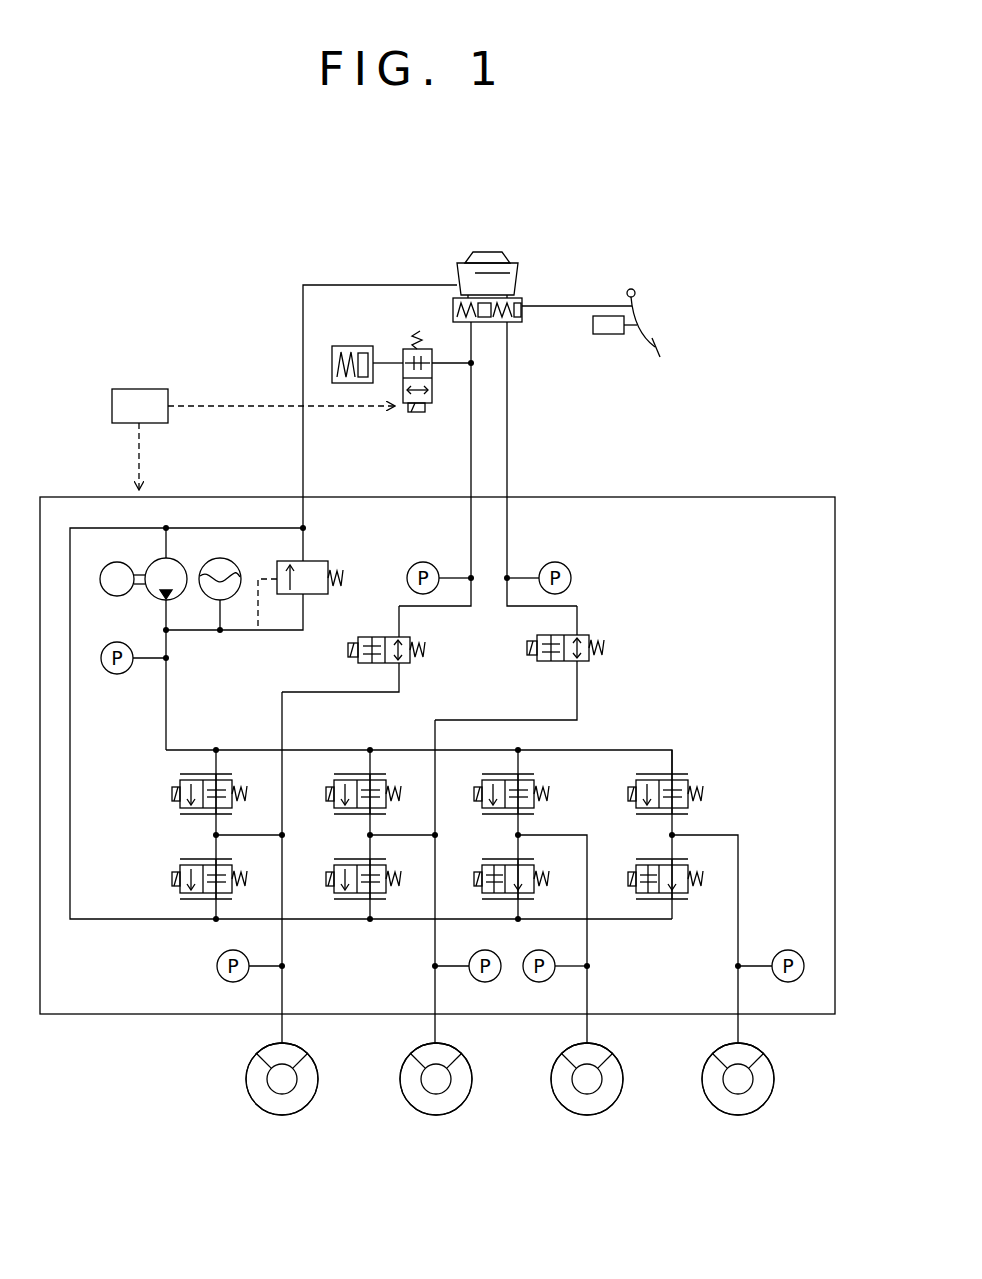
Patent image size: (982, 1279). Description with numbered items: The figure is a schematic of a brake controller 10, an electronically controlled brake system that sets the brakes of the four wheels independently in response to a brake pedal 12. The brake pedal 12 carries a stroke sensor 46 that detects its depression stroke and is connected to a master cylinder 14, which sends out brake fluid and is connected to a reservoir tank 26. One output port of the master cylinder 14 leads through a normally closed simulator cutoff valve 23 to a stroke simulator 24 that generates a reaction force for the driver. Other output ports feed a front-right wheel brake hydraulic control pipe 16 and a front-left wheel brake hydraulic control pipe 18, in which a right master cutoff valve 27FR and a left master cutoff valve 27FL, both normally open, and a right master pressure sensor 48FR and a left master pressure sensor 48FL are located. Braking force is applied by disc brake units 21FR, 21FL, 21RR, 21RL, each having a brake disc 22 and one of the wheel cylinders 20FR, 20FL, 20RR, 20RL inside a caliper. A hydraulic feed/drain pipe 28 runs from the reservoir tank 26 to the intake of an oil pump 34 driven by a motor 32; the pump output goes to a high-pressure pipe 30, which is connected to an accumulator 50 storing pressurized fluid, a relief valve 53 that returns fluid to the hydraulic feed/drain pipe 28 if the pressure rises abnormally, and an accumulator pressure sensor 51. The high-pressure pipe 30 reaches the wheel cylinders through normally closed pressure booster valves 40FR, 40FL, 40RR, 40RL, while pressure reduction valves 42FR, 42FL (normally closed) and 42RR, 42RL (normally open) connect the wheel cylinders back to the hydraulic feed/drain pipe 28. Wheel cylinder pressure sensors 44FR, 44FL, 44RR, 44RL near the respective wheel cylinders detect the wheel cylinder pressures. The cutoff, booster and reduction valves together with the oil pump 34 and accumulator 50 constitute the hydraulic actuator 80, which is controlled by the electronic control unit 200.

The brake controller 10 is at (230, 320).
The brake pedal 12 is at (662, 350).
The master cylinder 14 is at (517, 322).
The front-right wheel brake hydraulic control pipe 16 is at (441, 606).
The front-left wheel brake hydraulic control pipe 18 is at (522, 606).
The front-right wheel cylinder 20FR is at (266, 1060).
The front-left wheel cylinder 20FL is at (420, 1060).
The rear-left wheel cylinder 20RL is at (571, 1060).
The rear-right wheel cylinder 20RR is at (722, 1060).
The disc brake unit 21FR is at (246, 1098).
The disc brake unit 21FL is at (397, 1098).
The disc brake unit 21RL is at (549, 1098).
The disc brake unit 21RR is at (701, 1098).
The brake disc 22 is at (283, 1103).
The simulator cutoff valve 23 is at (428, 410).
The stroke simulator 24 is at (352, 346).
The reservoir tank 26 is at (488, 252).
The right master cutoff valve 27FR is at (348, 651).
The left master cutoff valve 27FL is at (607, 650).
The hydraulic feed/drain pipe 28 is at (397, 285).
The high-pressure pipe 30 is at (168, 647).
The motor 32 is at (128, 564).
The oil pump 34 is at (176, 560).
The pressure booster valve 40FR is at (171, 797).
The pressure booster valve 40FL is at (357, 776).
The pressure booster valve 40RL is at (535, 782).
The pressure booster valve 40RR is at (682, 775).
The pressure reduction valve 42FR is at (171, 882).
The pressure reduction valve 42FL is at (356, 899).
The pressure reduction valve 42RL is at (535, 899).
The pressure reduction valve 42RR is at (680, 899).
The wheel cylinder pressure sensor 44FR is at (217, 966).
The wheel cylinder pressure sensor 44FL is at (478, 980).
The wheel cylinder pressure sensor 44RL is at (540, 982).
The wheel cylinder pressure sensor 44RR is at (790, 950).
The stroke sensor 46 is at (610, 334).
The right master pressure sensor 48FR is at (421, 562).
The left master pressure sensor 48FL is at (572, 569).
The accumulator 50 is at (233, 560).
The accumulator pressure sensor 51 is at (119, 675).
The relief valve 53 is at (316, 561).
The hydraulic actuator 80 is at (740, 497).
The electronic control unit 200 is at (143, 389).